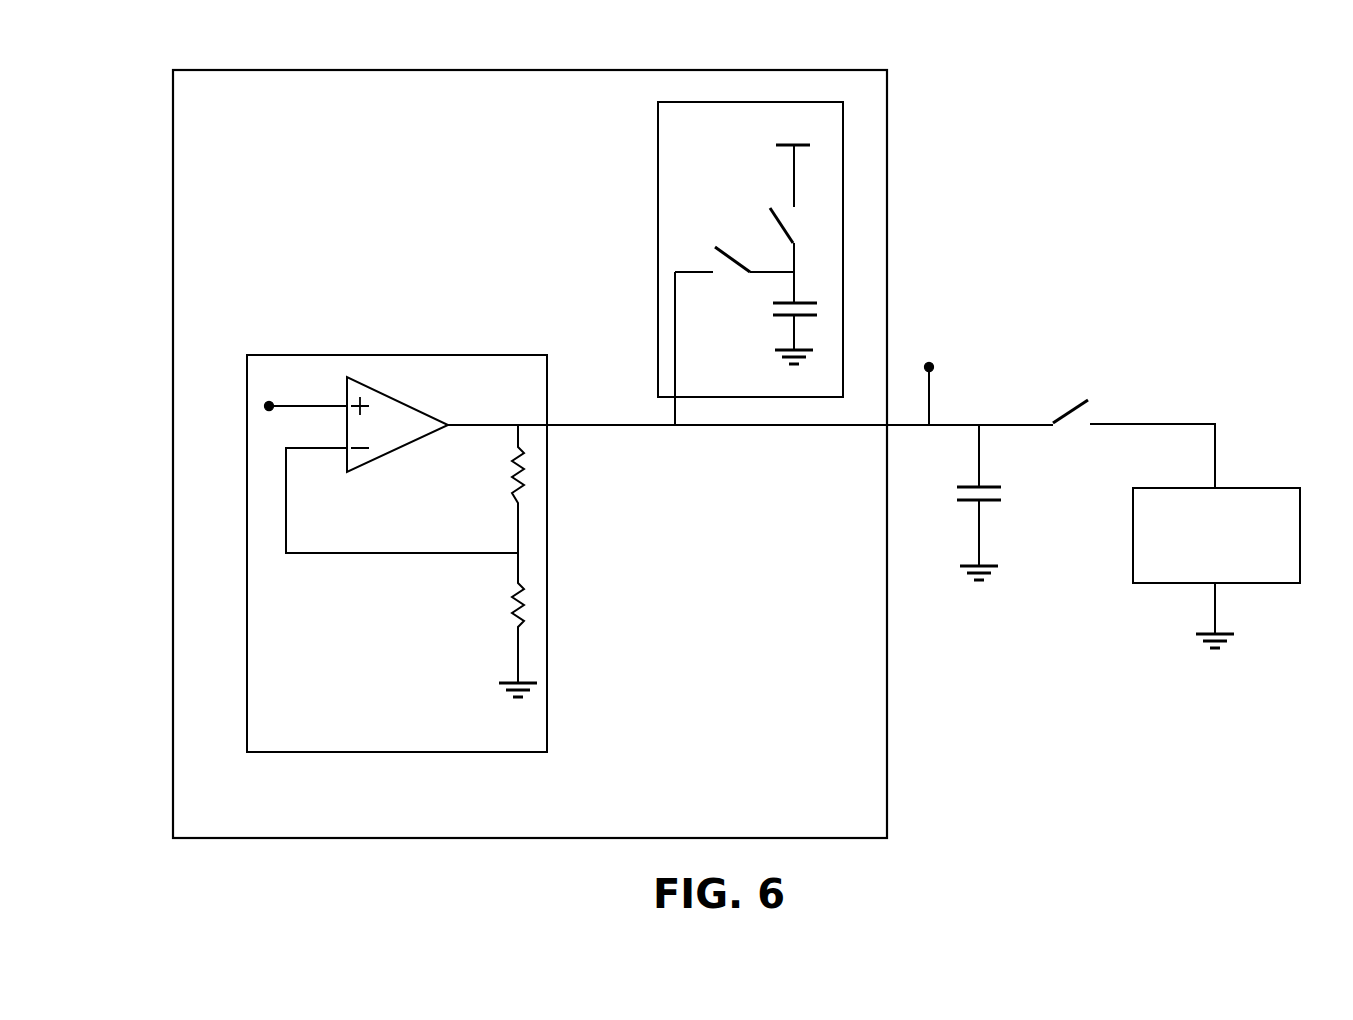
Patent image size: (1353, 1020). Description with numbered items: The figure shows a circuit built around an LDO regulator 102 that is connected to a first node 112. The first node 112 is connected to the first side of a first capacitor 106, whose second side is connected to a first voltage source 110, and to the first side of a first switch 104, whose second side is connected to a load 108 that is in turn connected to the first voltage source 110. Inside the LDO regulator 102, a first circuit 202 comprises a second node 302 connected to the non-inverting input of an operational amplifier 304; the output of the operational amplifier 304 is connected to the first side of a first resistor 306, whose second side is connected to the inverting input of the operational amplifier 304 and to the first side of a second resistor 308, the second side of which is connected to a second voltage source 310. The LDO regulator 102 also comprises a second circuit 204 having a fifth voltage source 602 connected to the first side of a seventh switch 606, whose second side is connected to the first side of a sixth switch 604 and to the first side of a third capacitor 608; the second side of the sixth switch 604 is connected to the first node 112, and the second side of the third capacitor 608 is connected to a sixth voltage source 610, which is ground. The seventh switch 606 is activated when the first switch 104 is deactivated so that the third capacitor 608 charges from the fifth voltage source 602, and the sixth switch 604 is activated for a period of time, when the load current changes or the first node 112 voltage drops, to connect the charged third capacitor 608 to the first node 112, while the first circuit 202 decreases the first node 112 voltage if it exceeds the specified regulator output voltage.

The LDO regulator 102 is at (378, 70).
The first switch 104 is at (1065, 410).
The first capacitor 106 is at (1000, 487).
The load 108 is at (1243, 488).
The first voltage source 110 is at (982, 583).
The first node 112 is at (930, 366).
The first circuit 202 is at (420, 355).
The second circuit 204 is at (658, 220).
The second node 302 is at (269, 406).
The operational amplifier 304 is at (393, 452).
The first resistor 306 is at (522, 490).
The second resistor 308 is at (522, 610).
The second voltage source 310 is at (518, 697).
The fifth voltage source 602 is at (794, 145).
The sixth switch 604 is at (745, 268).
The seventh switch 606 is at (790, 240).
The third capacitor 608 is at (800, 300).
The sixth voltage source 610 is at (796, 363).